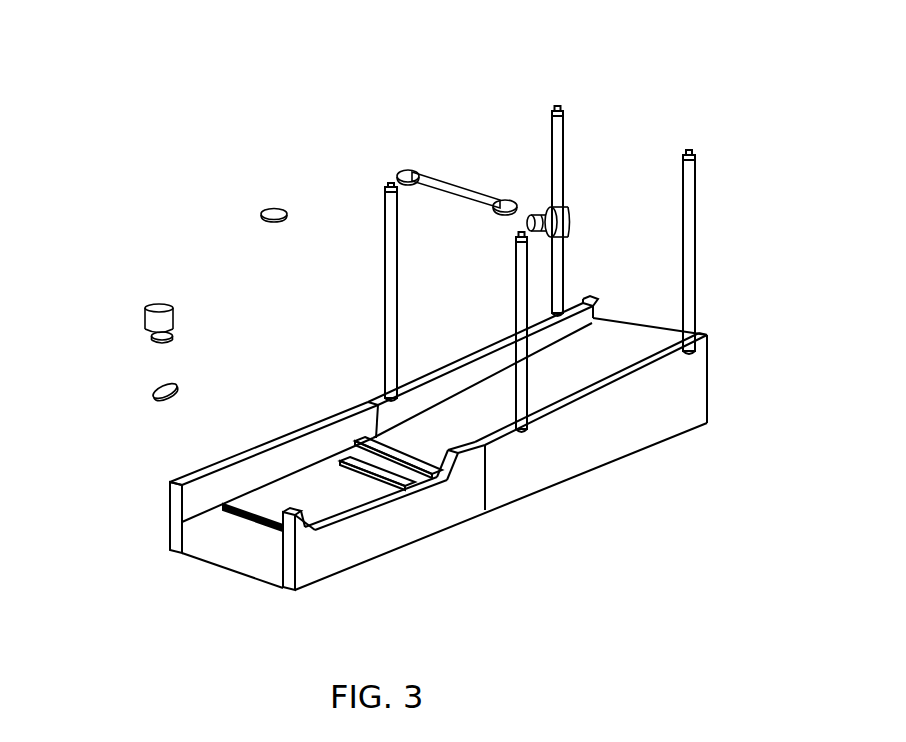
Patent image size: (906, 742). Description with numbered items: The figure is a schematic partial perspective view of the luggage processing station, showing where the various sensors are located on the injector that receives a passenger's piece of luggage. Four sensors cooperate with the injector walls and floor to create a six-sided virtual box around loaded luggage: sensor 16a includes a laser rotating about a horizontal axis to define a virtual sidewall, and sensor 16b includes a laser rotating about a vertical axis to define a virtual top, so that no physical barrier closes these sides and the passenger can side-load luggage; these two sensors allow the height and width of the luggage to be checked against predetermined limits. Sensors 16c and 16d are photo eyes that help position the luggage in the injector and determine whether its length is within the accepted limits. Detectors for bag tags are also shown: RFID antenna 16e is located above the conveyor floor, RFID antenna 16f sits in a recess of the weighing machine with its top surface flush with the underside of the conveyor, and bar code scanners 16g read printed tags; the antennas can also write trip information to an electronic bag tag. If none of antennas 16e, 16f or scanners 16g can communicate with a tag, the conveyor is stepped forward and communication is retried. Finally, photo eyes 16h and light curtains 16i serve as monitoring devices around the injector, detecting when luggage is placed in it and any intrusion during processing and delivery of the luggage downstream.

The sensor 16a is at (571, 226).
The sensor 16b is at (145, 318).
The sensor 16c is at (198, 491).
The sensor 16d is at (349, 440).
The RFID antenna 16e is at (462, 187).
The RFID antenna 16f is at (362, 488).
The bar code scanner 16g is at (259, 212).
The photo eye 16h is at (413, 408).
The light curtain 16i is at (386, 186).